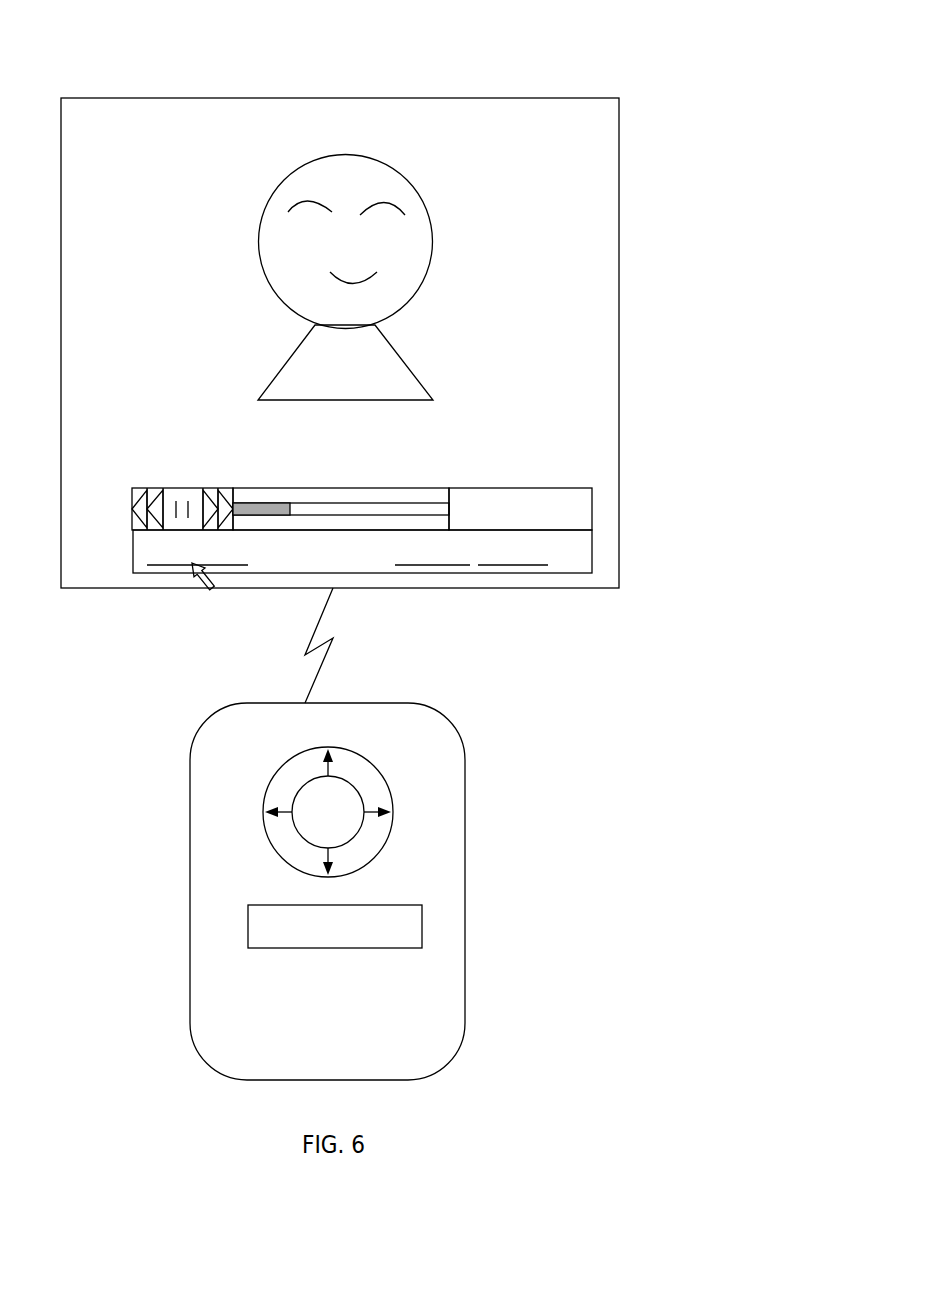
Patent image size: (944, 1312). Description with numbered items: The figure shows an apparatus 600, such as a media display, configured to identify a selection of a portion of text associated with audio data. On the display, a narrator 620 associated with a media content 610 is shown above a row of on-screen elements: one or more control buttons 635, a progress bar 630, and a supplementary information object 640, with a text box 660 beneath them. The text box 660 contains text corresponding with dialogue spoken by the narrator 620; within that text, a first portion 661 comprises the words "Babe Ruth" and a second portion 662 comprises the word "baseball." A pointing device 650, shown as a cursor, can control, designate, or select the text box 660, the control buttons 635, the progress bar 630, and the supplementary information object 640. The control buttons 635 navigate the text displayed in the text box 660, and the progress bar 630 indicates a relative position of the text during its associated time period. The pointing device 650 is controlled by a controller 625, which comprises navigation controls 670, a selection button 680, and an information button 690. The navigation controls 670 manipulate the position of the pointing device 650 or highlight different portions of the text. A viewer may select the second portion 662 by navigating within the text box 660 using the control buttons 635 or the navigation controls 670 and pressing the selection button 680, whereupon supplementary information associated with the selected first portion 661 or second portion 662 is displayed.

The apparatus 600 is at (355, 45).
The media content 610 is at (558, 98).
The narrator 620 is at (420, 190).
The controller 625 is at (465, 828).
The progress bar 630 is at (333, 503).
The control buttons 635 is at (183, 487).
The supplementary information object 640 is at (495, 487).
The pointing device 650 is at (193, 578).
The text box 660 is at (560, 573).
The first portion of text 661 is at (137, 563).
The second portion of text 662 is at (415, 565).
The navigation controls 670 is at (363, 753).
The selection button 680 is at (292, 795).
The information button 690 is at (363, 905).